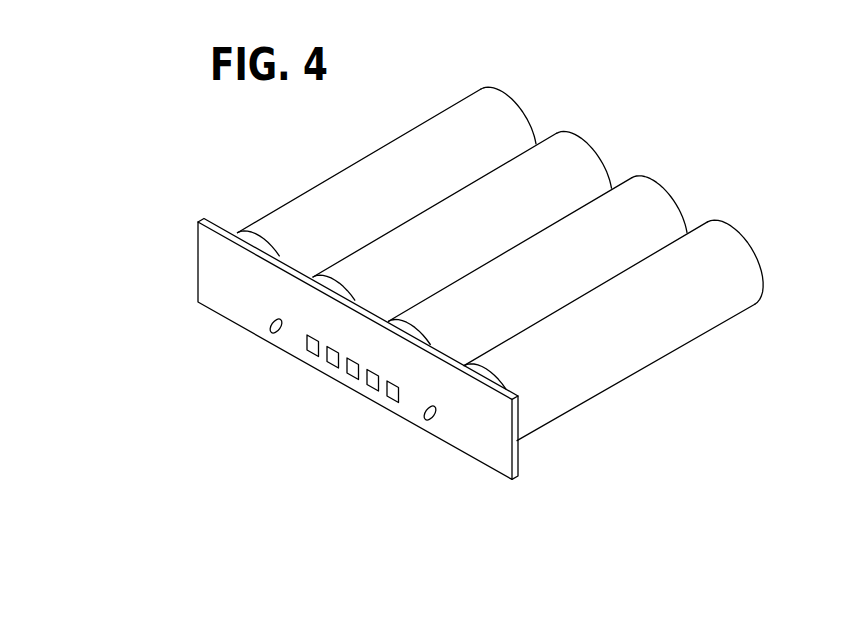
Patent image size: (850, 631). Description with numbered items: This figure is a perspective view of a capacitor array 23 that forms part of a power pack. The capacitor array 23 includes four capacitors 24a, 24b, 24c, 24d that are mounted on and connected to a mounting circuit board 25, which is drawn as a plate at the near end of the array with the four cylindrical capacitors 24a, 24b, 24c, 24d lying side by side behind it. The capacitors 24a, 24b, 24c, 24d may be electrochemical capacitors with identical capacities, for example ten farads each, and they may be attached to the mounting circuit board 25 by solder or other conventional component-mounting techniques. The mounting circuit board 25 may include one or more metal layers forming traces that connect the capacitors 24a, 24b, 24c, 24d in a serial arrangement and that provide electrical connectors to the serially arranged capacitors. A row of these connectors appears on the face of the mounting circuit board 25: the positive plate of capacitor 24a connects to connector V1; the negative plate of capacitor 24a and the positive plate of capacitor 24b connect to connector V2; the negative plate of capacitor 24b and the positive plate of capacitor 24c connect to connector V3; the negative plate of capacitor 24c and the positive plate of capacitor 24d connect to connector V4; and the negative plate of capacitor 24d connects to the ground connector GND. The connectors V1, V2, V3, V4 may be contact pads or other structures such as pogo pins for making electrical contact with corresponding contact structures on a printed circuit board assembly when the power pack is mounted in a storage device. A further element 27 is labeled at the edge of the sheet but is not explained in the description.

The capacitor array 23 is at (687, 430).
The capacitor 24a is at (495, 110).
The capacitor 24b is at (580, 157).
The capacitor 24c is at (653, 205).
The capacitor 24d is at (727, 258).
The mounting circuit board 25 is at (212, 240).
The enclosure 27 is at (849, 4).
The connector V1 is at (315, 347).
The connector V2 is at (337, 358).
The connector V3 is at (355, 373).
The connector V4 is at (375, 385).
The ground connector GND is at (395, 392).